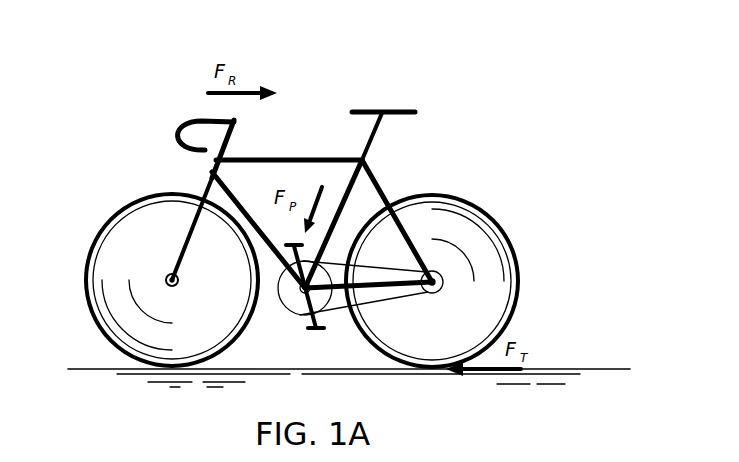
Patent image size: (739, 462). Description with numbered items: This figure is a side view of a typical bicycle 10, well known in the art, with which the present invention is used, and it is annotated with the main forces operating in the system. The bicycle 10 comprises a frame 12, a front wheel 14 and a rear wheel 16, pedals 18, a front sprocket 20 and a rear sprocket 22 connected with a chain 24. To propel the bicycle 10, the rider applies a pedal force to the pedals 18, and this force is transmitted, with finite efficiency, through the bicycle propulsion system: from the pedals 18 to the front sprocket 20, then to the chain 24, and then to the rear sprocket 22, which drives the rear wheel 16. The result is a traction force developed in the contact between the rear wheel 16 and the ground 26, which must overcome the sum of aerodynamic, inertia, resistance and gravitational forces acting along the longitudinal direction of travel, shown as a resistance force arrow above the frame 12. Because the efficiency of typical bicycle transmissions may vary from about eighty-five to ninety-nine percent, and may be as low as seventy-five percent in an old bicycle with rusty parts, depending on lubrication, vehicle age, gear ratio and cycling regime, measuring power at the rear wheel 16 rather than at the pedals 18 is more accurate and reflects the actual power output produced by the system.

The bicycle 10 is at (142, 147).
The frame 12 is at (316, 144).
The front wheel 14 is at (95, 243).
The rear wheel 16 is at (501, 221).
The pedals 18 is at (318, 333).
The front sprocket 20 is at (296, 306).
The rear sprocket 22 is at (438, 289).
The chain 24 is at (385, 301).
The ground 26 is at (610, 370).